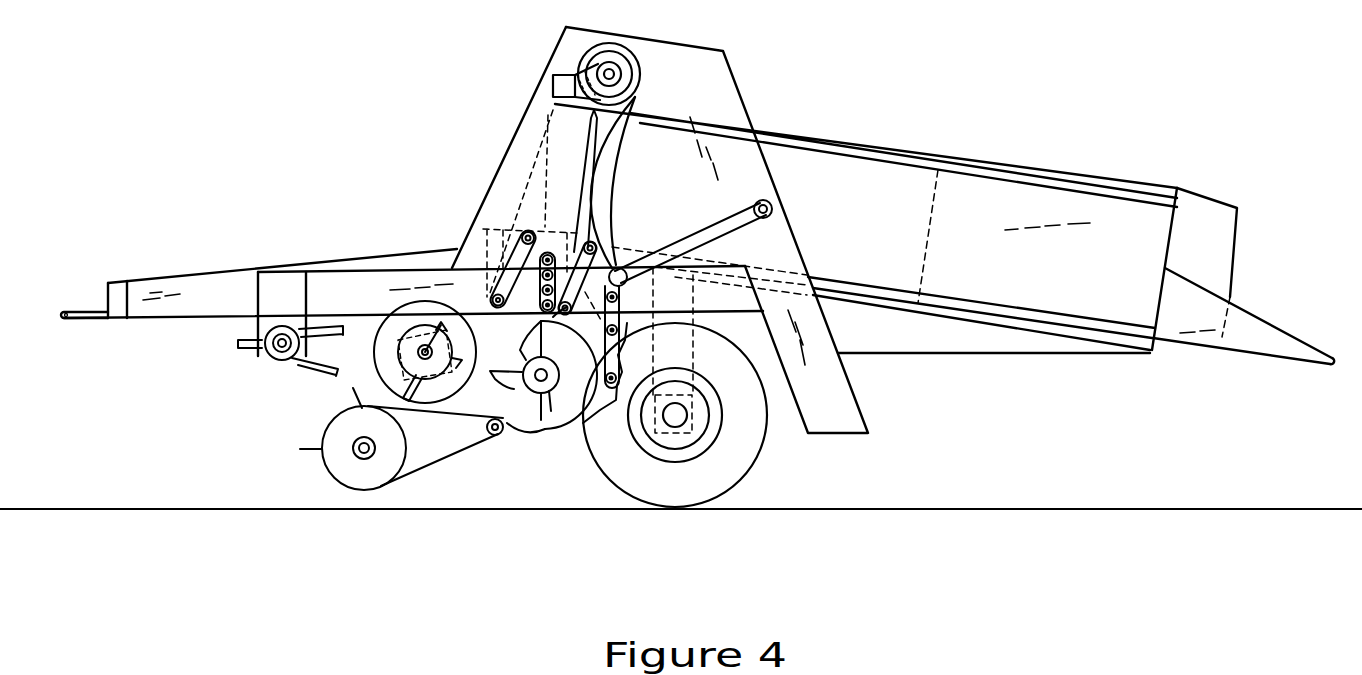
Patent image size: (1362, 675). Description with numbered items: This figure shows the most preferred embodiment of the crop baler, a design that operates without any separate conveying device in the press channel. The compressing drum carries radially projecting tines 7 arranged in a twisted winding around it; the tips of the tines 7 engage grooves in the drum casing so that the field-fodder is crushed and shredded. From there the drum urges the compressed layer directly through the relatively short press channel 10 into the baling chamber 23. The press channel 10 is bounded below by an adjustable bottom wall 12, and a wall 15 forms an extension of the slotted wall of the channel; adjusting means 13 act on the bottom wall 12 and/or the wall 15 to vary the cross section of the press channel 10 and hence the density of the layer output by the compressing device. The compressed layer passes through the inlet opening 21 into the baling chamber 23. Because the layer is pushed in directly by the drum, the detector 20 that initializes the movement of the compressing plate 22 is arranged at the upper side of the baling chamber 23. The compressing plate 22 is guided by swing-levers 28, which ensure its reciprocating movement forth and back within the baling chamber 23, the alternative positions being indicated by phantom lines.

The tines 7 is at (550, 418).
The press channel 10 is at (580, 352).
The adjustable bottom wall 12 is at (622, 325).
The adjusting means 13 is at (621, 342).
The wall 15 is at (505, 272).
The detector 20 is at (633, 115).
The inlet opening 21 is at (592, 205).
The compressing plate 22 is at (592, 167).
The baling chamber 23 is at (853, 182).
The swing-levers 28 is at (518, 252).